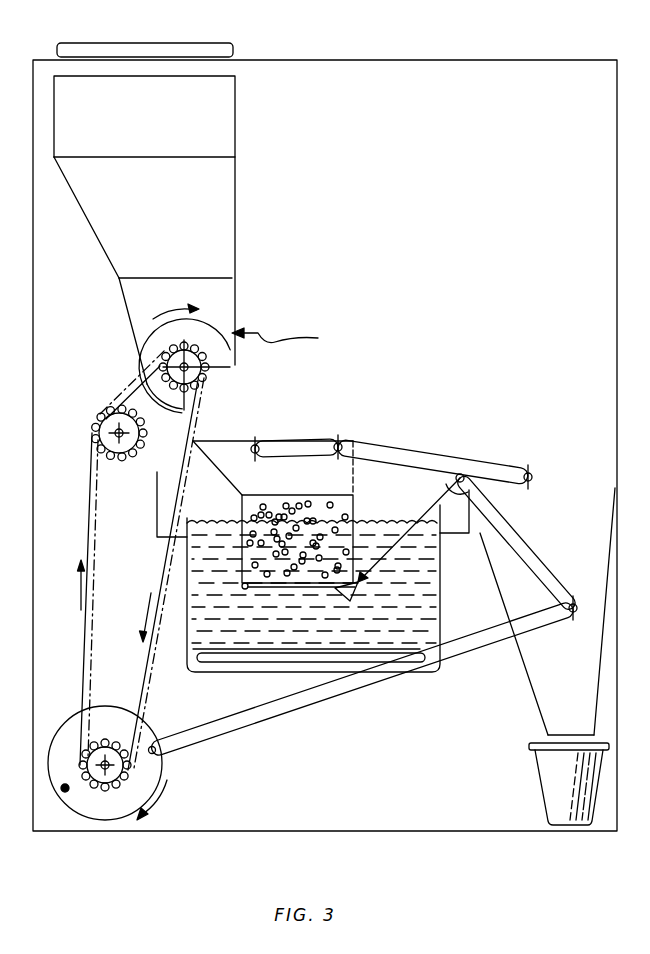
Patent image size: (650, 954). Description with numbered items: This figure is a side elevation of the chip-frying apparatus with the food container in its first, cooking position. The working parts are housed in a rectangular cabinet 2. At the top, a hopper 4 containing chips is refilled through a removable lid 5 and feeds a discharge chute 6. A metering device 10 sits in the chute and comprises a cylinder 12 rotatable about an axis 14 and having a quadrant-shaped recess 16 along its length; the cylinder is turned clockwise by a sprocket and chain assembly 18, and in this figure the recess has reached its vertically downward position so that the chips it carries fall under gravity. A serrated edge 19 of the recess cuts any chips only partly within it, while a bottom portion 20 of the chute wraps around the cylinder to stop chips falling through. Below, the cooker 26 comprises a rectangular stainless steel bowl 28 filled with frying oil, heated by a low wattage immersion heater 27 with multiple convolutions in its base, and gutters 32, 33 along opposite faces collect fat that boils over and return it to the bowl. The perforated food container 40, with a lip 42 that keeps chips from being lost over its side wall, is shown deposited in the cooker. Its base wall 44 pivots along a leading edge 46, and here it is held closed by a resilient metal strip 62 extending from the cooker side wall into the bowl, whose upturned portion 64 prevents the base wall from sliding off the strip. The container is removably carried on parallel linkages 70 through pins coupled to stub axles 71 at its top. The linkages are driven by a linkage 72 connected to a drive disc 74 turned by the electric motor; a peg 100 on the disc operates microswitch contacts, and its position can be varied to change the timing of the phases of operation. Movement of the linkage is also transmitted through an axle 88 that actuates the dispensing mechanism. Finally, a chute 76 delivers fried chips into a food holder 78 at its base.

The cabinet 2 is at (312, 58).
The hopper 4 is at (227, 107).
The removable lid 5 is at (174, 48).
The discharge chute 6 is at (225, 300).
The metering device 10 is at (289, 338).
The cylinder 12 is at (151, 345).
The axis 14 is at (162, 363).
The recess 16 is at (213, 384).
The sprocket and chain assembly 18 is at (205, 422).
The serrated edge 19 is at (230, 371).
The bottom portion of the discharge chute 20 is at (148, 405).
The cooker 26 is at (228, 675).
The immersion heater 27 is at (343, 655).
The bowl 28 is at (295, 667).
The gutter 32 is at (167, 497).
The gutter 33 is at (455, 527).
The food container 40 is at (242, 547).
The lip 42 is at (217, 472).
The base wall 44 is at (302, 588).
The leading edge 46 is at (245, 591).
The resilient metal strip 62 is at (394, 562).
The upturned portion 64 is at (333, 594).
The parallel linkages 70 is at (420, 459).
The stub axles 71 is at (263, 443).
The linkage 72 is at (232, 727).
The drive disc 74 is at (107, 813).
The chute 76 is at (528, 697).
The food holder 78 is at (557, 807).
The axle 88 is at (468, 499).
The peg 100 is at (63, 793).